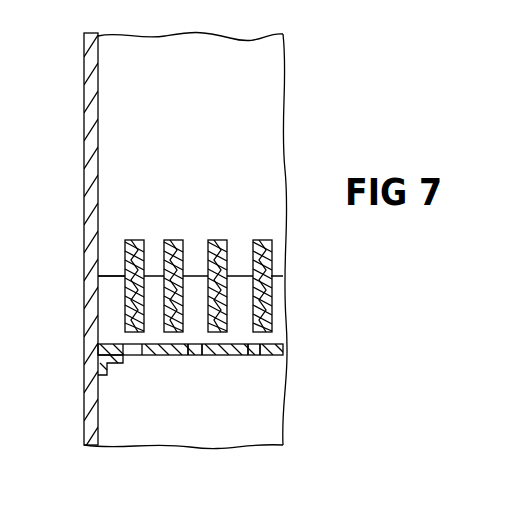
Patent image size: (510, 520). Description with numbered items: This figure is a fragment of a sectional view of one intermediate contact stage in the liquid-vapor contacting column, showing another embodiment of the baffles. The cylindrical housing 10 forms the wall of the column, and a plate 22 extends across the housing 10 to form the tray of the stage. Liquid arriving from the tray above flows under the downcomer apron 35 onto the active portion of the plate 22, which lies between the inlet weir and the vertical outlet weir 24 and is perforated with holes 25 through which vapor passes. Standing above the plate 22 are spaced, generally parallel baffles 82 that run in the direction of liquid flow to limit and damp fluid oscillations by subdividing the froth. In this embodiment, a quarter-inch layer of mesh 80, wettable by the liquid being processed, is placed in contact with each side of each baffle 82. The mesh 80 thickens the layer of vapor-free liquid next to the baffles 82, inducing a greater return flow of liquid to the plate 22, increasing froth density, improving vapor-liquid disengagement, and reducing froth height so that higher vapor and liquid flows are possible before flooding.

The cylindrical housing 10 is at (85, 150).
The vertical outlet weir 24 is at (112, 275).
The layer of mesh 80 is at (218, 243).
The baffle 82 is at (252, 263).
The plate 22 is at (160, 356).
The holes 25 is at (251, 354).
The downcomer apron 35 is at (234, 435).